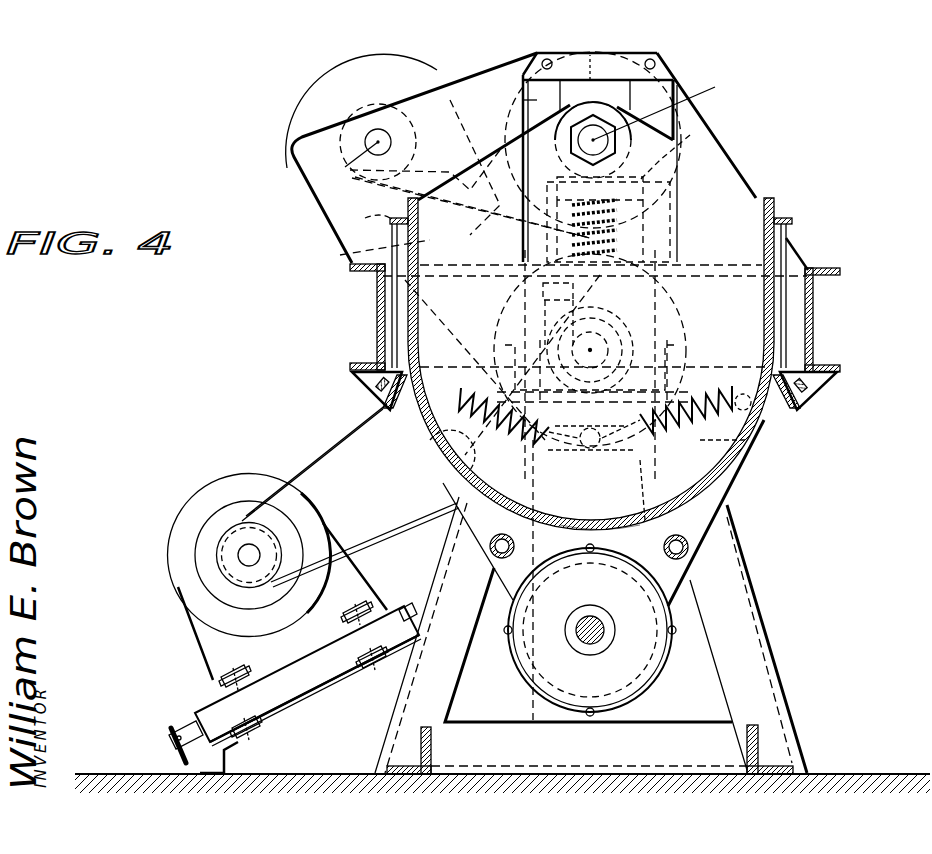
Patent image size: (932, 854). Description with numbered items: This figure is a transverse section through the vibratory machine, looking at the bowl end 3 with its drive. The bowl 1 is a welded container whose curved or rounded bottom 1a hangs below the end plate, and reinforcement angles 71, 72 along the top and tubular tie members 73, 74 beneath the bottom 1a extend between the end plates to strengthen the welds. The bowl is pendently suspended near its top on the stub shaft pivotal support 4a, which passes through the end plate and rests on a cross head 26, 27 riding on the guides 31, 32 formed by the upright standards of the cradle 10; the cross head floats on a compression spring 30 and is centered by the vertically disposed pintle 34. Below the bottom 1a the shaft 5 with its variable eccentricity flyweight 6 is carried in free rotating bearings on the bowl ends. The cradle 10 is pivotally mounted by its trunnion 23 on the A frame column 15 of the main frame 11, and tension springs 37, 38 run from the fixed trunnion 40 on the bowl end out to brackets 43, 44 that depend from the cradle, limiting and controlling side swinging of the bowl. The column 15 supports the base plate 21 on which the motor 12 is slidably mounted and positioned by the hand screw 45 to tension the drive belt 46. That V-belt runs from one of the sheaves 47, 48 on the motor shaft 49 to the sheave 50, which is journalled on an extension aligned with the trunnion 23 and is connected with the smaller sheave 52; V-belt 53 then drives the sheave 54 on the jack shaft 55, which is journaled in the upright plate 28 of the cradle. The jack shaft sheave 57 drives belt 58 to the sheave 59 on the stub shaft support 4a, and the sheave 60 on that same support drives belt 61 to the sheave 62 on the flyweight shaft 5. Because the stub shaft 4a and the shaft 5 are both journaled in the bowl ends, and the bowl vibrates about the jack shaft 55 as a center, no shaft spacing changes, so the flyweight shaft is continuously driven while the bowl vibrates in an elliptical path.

The bowl 1 is at (433, 327).
The curved or rounded bottom 1a is at (548, 524).
The bowl end 3 is at (745, 190).
The stub shaft pivotal support 4a is at (670, 107).
The shaft 5 is at (594, 622).
The flyweight 6 is at (573, 690).
The cradle 10 is at (352, 290).
The main frame 11 is at (432, 742).
The motor 12 is at (200, 500).
The frame column 15 is at (450, 683).
The base plate 21 is at (310, 703).
The trunnion 23 is at (625, 338).
The cross head 26 is at (603, 78).
The cross head 27 is at (650, 188).
The upright plate 28 is at (332, 108).
The compression spring 30 is at (660, 236).
The guide 31 is at (660, 97).
The guide 32 is at (537, 100).
The pintle 34 is at (558, 311).
The tension spring 37 is at (425, 460).
The tension spring 38 is at (745, 441).
The fixed trunnion 40 is at (595, 418).
The bracket 43 is at (366, 390).
The bracket 44 is at (812, 390).
The hand screw 45 is at (170, 728).
The drive belt 46 is at (330, 452).
The sheave 47 is at (225, 565).
The sheave 48 is at (235, 597).
The motor shaft 49 is at (258, 551).
The sheave 50 is at (682, 301).
The sheave 52 is at (672, 354).
The V-belt 53 is at (322, 259).
The sheave 54 is at (308, 82).
The jack shaft 55 is at (354, 169).
The sheave 57 is at (416, 143).
The belt 58 is at (490, 69).
The sheave 59 is at (712, 128).
The sheave 60 is at (622, 156).
The belt 61 is at (650, 479).
The sheave 62 is at (652, 668).
The reinforcement angle 71 is at (376, 284).
The reinforcement angle 72 is at (792, 218).
The tubular tie member 73 is at (490, 546).
The tubular tie member 74 is at (690, 547).